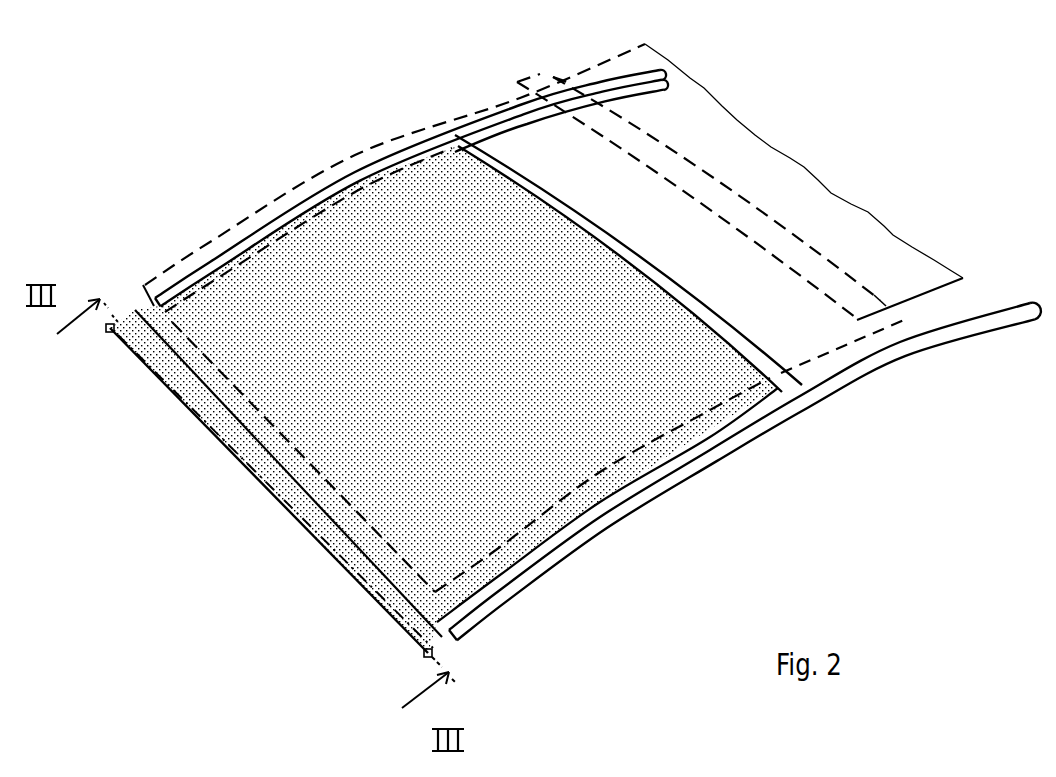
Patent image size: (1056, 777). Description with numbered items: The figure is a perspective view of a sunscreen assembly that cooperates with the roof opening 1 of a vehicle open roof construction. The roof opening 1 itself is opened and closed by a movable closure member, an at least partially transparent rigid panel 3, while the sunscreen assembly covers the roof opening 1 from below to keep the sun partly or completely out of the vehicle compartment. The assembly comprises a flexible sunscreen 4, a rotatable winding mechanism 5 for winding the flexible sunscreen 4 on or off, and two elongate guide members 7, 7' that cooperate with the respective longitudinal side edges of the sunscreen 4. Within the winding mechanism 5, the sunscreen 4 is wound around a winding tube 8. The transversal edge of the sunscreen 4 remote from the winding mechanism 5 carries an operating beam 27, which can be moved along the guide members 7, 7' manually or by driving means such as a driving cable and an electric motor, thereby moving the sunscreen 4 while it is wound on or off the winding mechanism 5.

The roof opening 1 is at (573, 349).
The rigid panel 3 is at (737, 123).
The flexible sunscreen 4 is at (372, 215).
The winding mechanism 5 is at (187, 425).
The guide member 7 is at (745, 472).
The guide member 7' is at (411, 188).
The winding tube 8 is at (243, 473).
The operating beam 27 is at (646, 265).